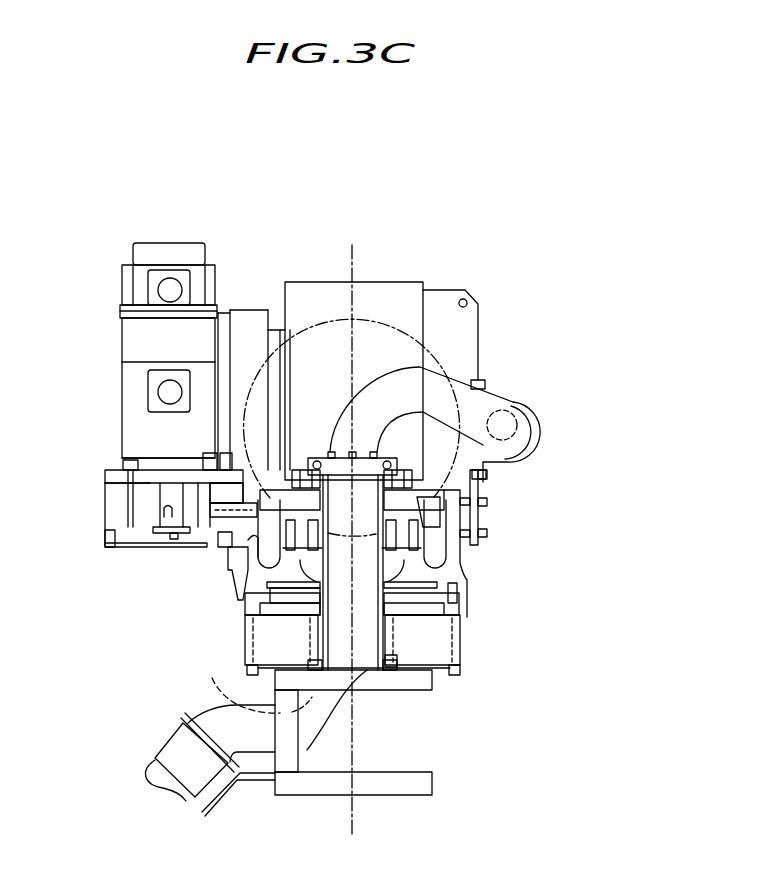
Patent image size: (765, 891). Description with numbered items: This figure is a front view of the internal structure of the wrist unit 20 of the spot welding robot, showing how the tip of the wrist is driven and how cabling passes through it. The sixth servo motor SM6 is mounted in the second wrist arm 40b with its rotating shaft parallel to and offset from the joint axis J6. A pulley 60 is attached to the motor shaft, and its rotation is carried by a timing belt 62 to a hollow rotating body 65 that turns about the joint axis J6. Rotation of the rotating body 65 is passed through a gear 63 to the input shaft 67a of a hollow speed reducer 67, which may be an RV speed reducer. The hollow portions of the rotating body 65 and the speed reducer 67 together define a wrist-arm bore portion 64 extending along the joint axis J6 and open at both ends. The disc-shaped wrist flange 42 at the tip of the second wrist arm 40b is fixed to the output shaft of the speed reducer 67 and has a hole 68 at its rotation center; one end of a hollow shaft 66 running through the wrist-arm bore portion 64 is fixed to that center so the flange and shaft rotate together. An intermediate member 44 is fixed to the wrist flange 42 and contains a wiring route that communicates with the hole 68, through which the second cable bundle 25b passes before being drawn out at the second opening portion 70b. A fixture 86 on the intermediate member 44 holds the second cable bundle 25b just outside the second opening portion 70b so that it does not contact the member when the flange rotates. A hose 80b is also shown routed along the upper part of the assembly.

The wrist unit 20 is at (499, 241).
The sixth servo motor SM6 is at (163, 250).
The joint axis J6 is at (348, 524).
The hose 80b is at (530, 408).
The pulley 60 is at (160, 525).
The timing belt 62 is at (228, 512).
The gear 63 is at (243, 580).
The input shaft 67a is at (268, 603).
The second wrist arm 40b is at (468, 521).
The rotating body 65 is at (430, 553).
The hollow shaft 66 is at (455, 588).
The speed reducer 67 is at (440, 634).
The wrist-arm bore portion 64 is at (460, 670).
The wrist flange 42 is at (402, 665).
The hole 68 is at (363, 677).
The second cable bundle 25b is at (343, 717).
The intermediate member 44 is at (408, 785).
The second opening portion 70b is at (245, 679).
The fixture 86 is at (173, 750).